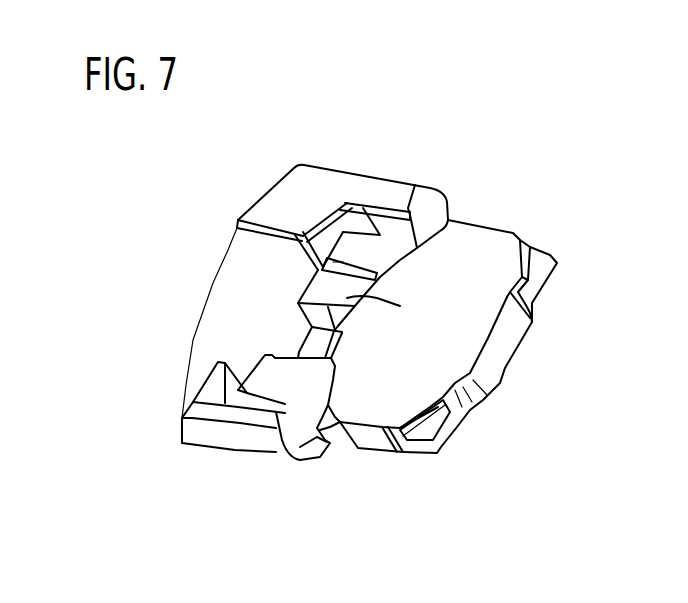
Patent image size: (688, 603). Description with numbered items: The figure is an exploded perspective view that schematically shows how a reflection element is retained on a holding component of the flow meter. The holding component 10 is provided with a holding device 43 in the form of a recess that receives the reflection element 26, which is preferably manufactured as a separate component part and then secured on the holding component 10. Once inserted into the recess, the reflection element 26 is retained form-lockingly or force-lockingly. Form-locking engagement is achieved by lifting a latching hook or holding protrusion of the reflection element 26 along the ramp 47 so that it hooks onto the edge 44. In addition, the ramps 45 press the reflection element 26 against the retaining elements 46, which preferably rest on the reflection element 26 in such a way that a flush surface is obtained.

The holding component 10 is at (415, 167).
The reflection element 26 is at (560, 253).
The holding device 43 is at (277, 366).
The edge 44 is at (287, 310).
The ramps 45 is at (317, 268).
The retaining elements 46 is at (295, 212).
The ramp 47 is at (362, 300).